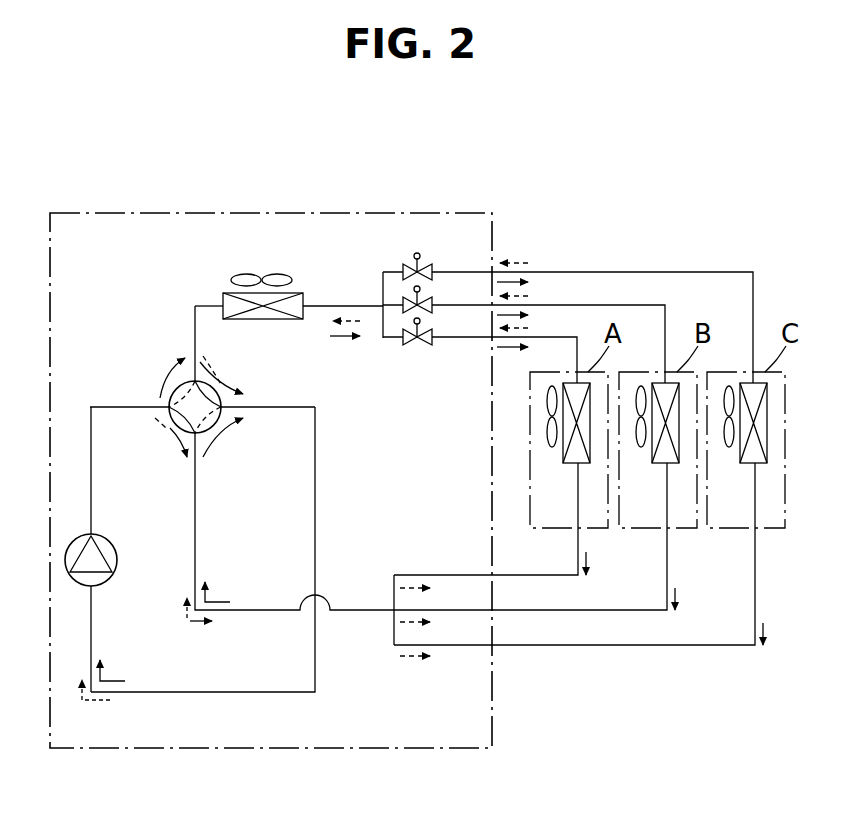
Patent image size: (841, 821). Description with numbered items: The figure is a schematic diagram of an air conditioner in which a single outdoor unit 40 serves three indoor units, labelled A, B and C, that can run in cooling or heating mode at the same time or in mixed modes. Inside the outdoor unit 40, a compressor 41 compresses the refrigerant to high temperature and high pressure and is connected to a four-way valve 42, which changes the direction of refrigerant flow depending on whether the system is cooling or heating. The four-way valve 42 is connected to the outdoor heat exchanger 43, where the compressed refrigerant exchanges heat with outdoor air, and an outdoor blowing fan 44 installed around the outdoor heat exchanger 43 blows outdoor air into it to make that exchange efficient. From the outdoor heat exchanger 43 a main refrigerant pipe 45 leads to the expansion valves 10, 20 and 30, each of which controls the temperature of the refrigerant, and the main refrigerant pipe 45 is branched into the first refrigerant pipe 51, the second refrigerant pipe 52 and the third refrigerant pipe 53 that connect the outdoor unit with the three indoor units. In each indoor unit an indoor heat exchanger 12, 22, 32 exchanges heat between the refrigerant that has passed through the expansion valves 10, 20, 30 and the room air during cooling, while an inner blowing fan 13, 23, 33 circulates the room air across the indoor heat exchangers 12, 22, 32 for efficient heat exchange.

The expansion valve 10 is at (433, 336).
The indoor heat exchanger 12 is at (573, 466).
The inner blowing fan 13 is at (552, 448).
The expansion valve 20 is at (433, 303).
The indoor heat exchanger 22 is at (662, 466).
The inner blowing fan 23 is at (641, 448).
The expansion valve 30 is at (433, 270).
The indoor heat exchanger 32 is at (750, 466).
The inner blowing fan 33 is at (729, 448).
The outdoor unit 40 is at (400, 213).
The compressor 41 is at (117, 536).
The 4-way valve 42 is at (170, 400).
The outdoor heat exchanger 43 is at (262, 320).
The outdoor blowing fan 44 is at (232, 279).
The main refrigerant pipe 45 is at (331, 306).
The first refrigerant pipe 51 is at (553, 337).
The second refrigerant pipe 52 is at (617, 305).
The third refrigerant pipe 53 is at (697, 272).